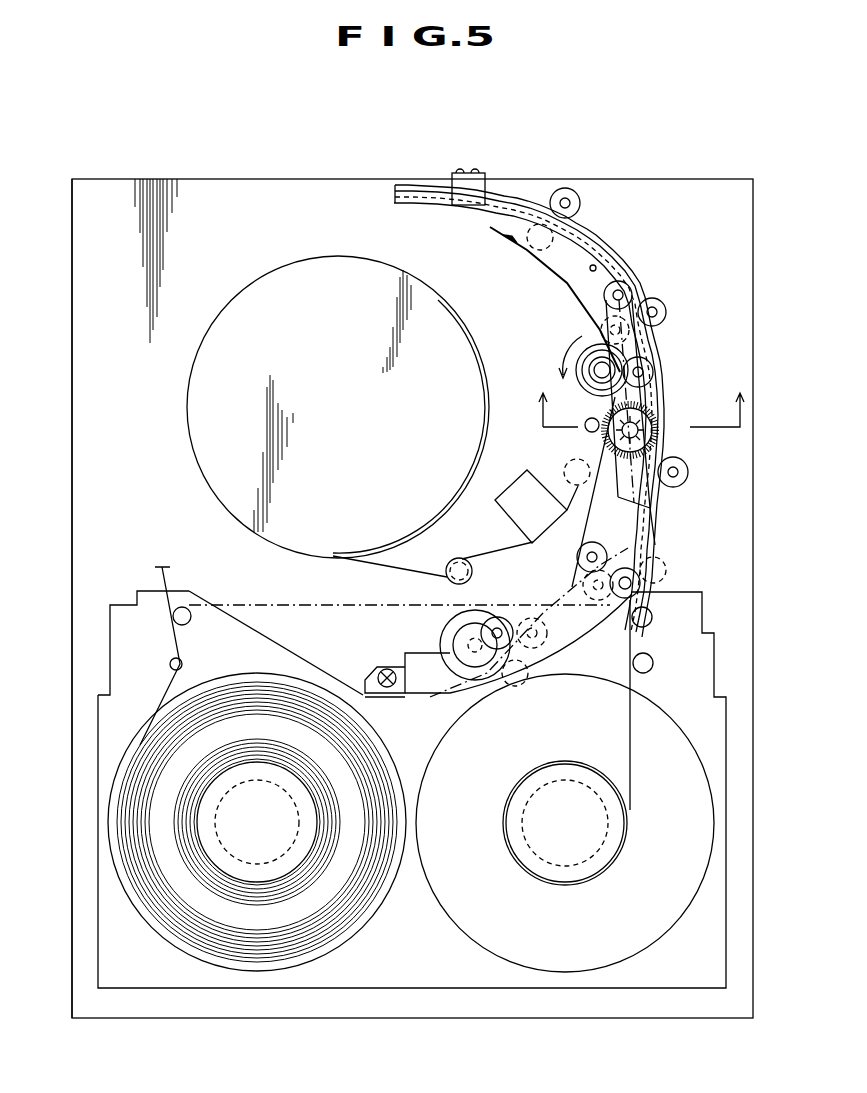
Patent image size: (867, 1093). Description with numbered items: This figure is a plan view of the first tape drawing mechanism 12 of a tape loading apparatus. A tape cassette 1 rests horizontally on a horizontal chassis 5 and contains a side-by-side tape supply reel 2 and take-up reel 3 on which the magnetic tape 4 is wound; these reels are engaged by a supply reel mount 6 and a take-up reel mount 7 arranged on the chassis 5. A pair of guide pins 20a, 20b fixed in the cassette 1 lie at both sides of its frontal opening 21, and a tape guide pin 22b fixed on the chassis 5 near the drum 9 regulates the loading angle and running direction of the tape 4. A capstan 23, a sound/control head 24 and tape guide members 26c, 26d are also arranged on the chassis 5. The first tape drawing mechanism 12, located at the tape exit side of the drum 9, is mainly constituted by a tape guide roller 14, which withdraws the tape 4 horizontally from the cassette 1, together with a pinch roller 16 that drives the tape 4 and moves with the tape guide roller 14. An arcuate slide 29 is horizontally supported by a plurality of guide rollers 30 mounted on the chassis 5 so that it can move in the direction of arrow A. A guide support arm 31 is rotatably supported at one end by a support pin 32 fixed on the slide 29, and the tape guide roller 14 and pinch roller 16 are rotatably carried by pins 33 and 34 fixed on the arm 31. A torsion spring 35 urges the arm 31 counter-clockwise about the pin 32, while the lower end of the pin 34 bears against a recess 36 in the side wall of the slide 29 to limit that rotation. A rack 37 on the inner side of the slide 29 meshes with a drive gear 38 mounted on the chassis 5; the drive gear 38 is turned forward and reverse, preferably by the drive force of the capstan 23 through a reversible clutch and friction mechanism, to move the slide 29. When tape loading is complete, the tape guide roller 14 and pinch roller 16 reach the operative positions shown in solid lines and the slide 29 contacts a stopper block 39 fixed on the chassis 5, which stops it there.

The tape cassette 1 is at (110, 953).
The tape supply reel 2 is at (258, 972).
The take-up reel 3 is at (572, 972).
The magnetic tape 4 is at (654, 548).
The chassis 5 is at (86, 576).
The supply reel mount 6 is at (291, 848).
The take-up reel mount 7 is at (596, 846).
The drum 9 is at (335, 268).
The first tape drawing mechanism 12 is at (684, 360).
The tape guide roller 14 is at (660, 388).
The pinch roller 16 is at (655, 445).
The guide pin 20a is at (170, 660).
The guide pin 20b is at (652, 662).
The frontal opening 21 is at (262, 636).
The tape guide pin 22b is at (468, 560).
The capstan 23 is at (585, 428).
The sound/control head 24 is at (516, 490).
The tape guide member 26c is at (582, 486).
The tape guide member 26d is at (666, 570).
The arcuate slide 29 is at (582, 246).
The guide rollers 30 is at (525, 682).
The guide support arm 31 is at (648, 345).
The support pin 32 is at (630, 289).
The pin 33 is at (653, 372).
The pin 34 is at (650, 432).
The torsion spring 35 is at (592, 272).
The recess 36 is at (652, 418).
The rack 37 is at (482, 215).
The drive gear 38 is at (577, 370).
The stopper block 39 is at (483, 182).